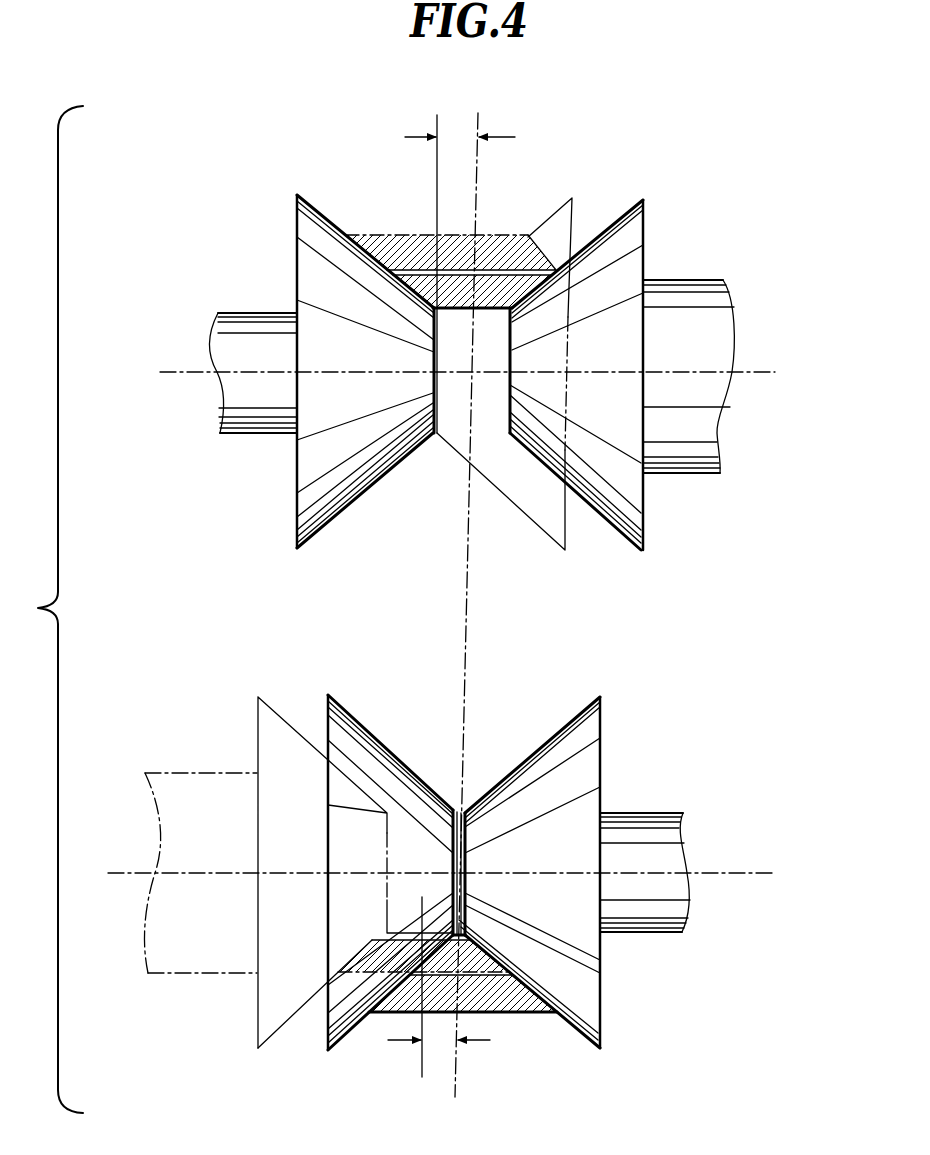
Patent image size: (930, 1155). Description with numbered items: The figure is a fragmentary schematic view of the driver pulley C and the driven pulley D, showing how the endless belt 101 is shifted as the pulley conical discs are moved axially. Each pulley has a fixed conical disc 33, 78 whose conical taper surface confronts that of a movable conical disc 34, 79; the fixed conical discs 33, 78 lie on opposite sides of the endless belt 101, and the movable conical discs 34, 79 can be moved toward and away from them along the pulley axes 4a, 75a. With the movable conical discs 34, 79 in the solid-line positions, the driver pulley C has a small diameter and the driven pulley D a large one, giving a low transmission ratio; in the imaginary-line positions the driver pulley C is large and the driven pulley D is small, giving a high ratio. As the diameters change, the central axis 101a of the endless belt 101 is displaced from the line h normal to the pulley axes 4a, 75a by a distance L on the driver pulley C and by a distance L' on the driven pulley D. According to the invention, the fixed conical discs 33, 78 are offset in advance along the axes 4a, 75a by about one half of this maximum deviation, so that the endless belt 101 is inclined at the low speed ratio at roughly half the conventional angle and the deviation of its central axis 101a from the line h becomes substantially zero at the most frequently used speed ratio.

The driver pulley C is at (604, 197).
The driven pulley D is at (488, 1054).
The pulley axis 4a is at (178, 372).
The fixed conical disc 33 is at (308, 407).
The movable conical disc 34 is at (628, 238).
The pulley axis 75a is at (133, 873).
The fixed conical disc 78 is at (565, 742).
The movable conical disc 79 is at (338, 1018).
The endless belt 101 is at (450, 287).
The central axis of the endless belt 101a is at (437, 189).
The deviation on the driver pulley L is at (460, 135).
The deviation on the driven pulley L' is at (439, 1040).
The line normal to pulley axes h is at (459, 745).